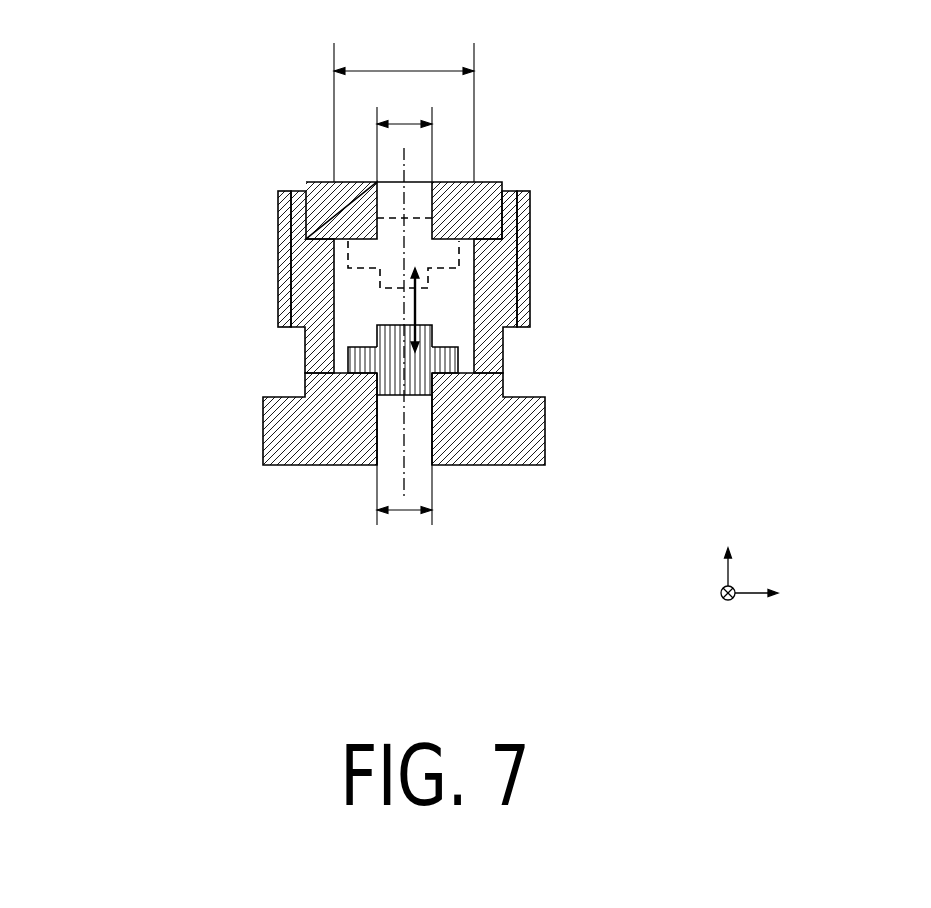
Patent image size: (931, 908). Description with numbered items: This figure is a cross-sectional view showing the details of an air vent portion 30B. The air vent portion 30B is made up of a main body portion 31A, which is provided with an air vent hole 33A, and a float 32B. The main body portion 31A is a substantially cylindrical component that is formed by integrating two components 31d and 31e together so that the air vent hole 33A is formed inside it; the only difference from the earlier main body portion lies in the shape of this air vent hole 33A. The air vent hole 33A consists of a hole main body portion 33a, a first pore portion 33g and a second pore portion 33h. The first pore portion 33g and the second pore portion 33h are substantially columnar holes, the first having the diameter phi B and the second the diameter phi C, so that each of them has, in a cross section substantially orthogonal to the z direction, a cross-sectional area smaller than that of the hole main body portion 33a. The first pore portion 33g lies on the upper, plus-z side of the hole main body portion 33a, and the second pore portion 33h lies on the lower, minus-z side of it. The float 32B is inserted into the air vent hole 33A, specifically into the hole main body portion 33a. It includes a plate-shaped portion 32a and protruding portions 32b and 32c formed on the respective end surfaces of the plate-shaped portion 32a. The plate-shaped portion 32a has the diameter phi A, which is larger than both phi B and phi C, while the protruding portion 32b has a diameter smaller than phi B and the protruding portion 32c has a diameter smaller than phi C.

The air vent portion 30B is at (732, 88).
The main body portion 31A is at (152, 130).
The component 31d is at (325, 193).
The component 31e is at (288, 210).
The float 32B is at (158, 272).
The plate-shaped portion 32a is at (388, 355).
The protruding portion 32b is at (397, 333).
The protruding portion 32c is at (395, 387).
The air vent hole 33A is at (693, 182).
The first pore portion 33g is at (420, 218).
The hole main body portion 33a is at (455, 292).
The second pore portion 33h is at (430, 417).